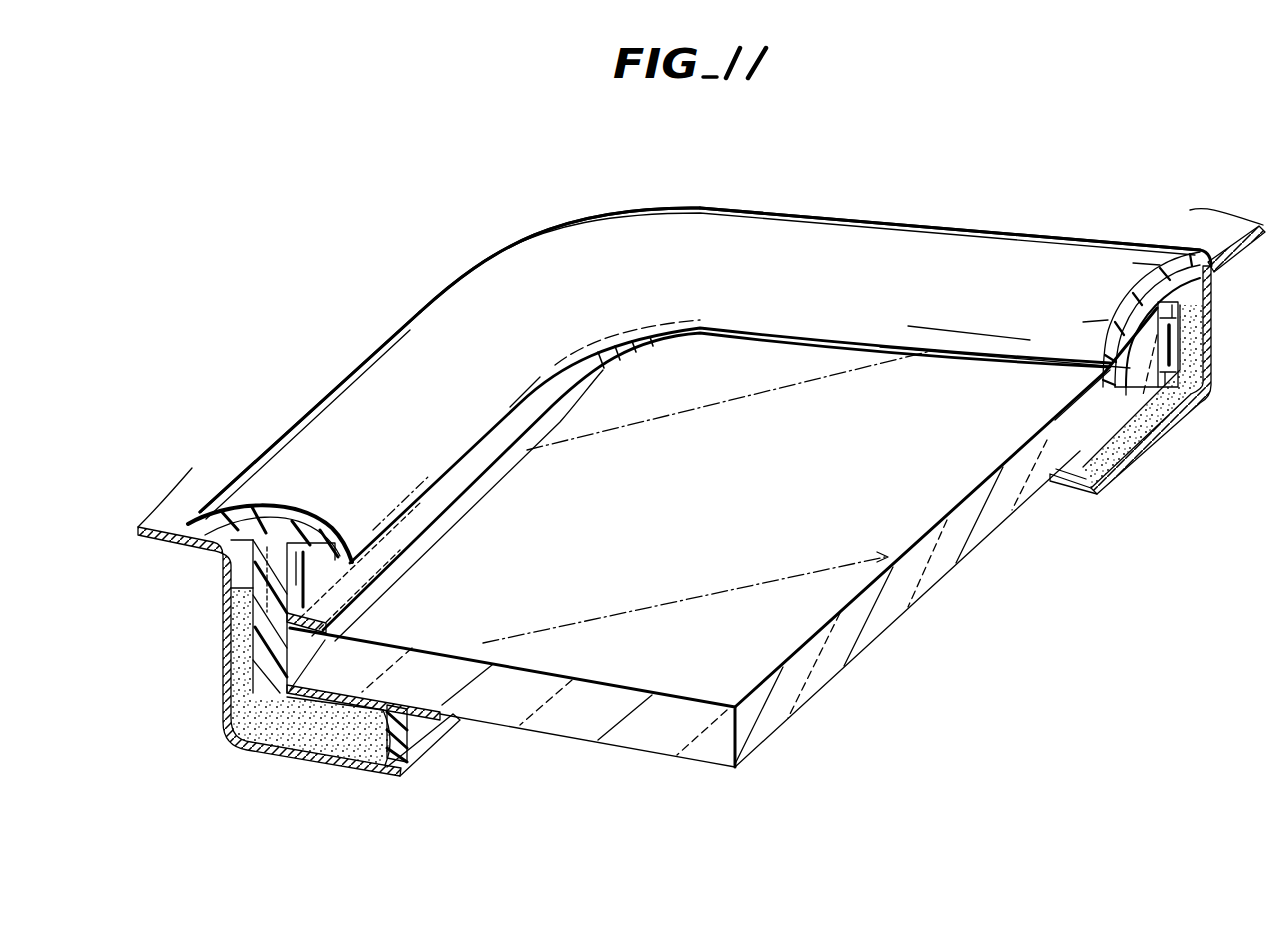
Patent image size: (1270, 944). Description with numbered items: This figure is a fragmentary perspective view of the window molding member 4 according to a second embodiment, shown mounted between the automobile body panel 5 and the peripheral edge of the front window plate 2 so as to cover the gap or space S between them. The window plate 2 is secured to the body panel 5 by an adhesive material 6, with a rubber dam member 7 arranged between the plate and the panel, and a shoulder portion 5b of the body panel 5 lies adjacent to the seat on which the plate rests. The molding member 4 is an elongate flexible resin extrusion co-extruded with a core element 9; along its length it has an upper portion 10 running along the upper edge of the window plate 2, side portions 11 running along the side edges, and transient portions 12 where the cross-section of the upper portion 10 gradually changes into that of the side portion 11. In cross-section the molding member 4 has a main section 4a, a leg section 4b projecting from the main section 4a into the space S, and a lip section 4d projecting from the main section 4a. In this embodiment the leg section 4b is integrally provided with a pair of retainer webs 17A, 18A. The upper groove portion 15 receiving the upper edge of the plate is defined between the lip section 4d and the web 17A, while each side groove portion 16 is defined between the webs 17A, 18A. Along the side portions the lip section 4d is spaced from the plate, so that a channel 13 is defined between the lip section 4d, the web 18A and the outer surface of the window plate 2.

The front window plate 2 is at (837, 590).
The window molding member 4 is at (487, 252).
The main section 4a is at (263, 452).
The leg section 4b is at (227, 720).
The lip section 4d is at (930, 340).
The automobile body panel 5 is at (167, 523).
The shoulder portion 5b is at (222, 600).
The adhesive material 6 is at (360, 733).
The rubber dam member 7 is at (410, 747).
The core element 9 is at (262, 615).
The upper portion 10 is at (961, 233).
The side portion 11 is at (410, 313).
The transient portion 12 is at (625, 222).
The channel 13 is at (312, 560).
The upper groove portion 15 is at (1203, 340).
The side groove portion 16 is at (280, 650).
The retainer web 17A is at (287, 737).
The retainer web 18A is at (1125, 297).
The gap or space S is at (240, 552).